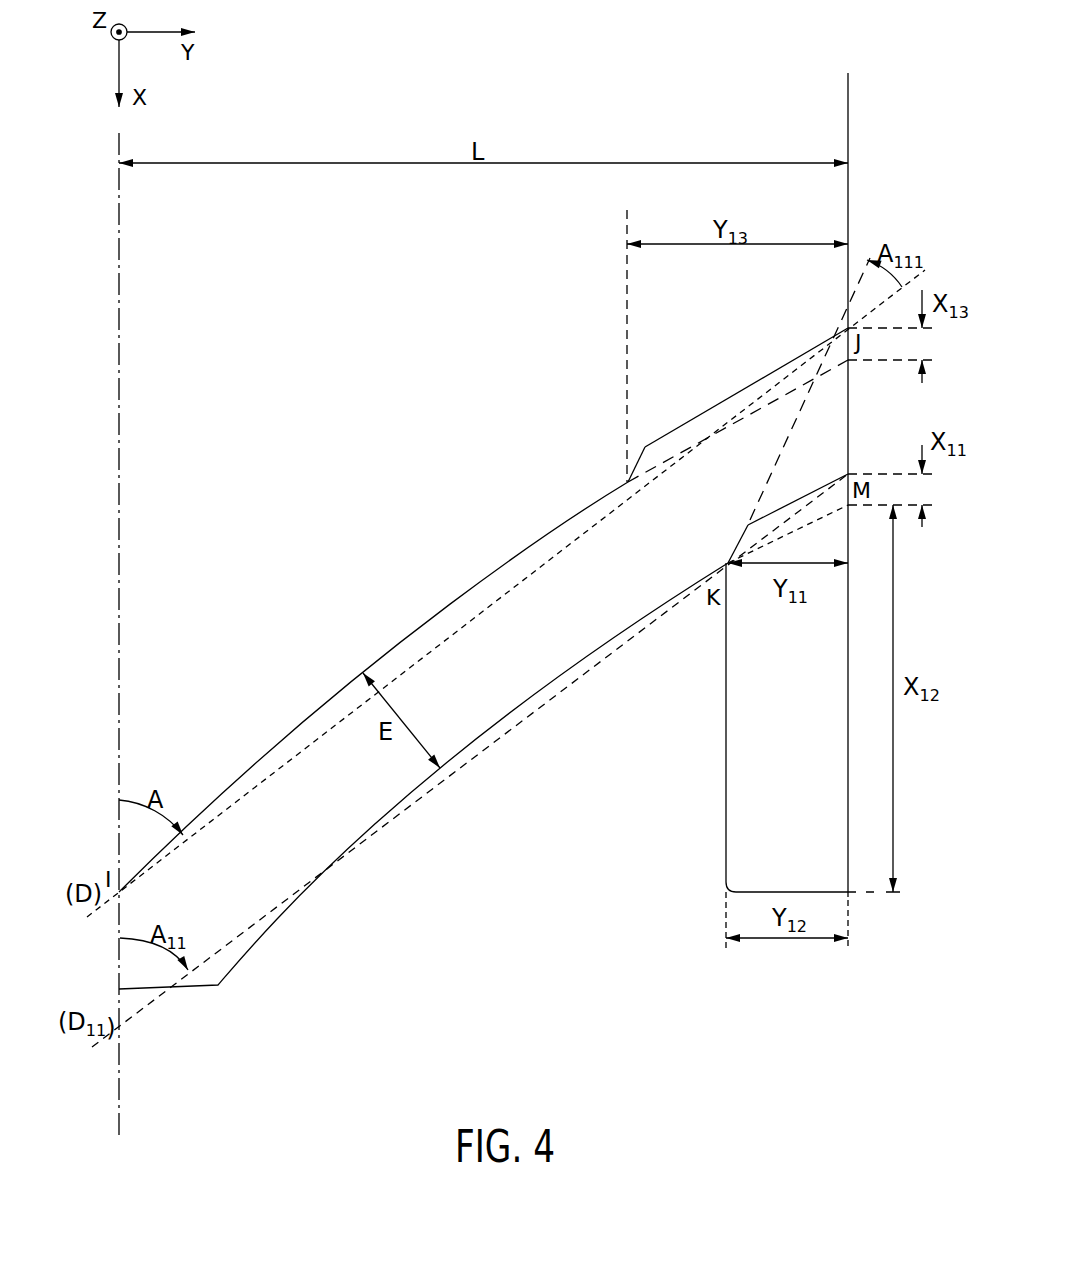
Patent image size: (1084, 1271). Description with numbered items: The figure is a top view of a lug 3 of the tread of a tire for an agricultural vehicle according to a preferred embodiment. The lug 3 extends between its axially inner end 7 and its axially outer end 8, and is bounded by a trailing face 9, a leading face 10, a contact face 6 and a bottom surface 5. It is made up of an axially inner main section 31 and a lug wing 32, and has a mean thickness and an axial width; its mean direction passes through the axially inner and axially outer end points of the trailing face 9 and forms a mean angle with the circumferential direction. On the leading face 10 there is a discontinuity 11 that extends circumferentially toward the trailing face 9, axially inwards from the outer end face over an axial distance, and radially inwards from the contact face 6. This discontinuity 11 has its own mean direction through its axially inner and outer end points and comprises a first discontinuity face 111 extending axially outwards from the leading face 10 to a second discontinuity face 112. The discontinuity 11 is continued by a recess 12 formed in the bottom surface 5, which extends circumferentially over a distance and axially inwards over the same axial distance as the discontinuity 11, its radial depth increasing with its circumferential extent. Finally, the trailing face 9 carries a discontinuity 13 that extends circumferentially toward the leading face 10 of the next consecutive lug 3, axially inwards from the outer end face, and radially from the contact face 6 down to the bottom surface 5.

The lug 3 is at (477, 684).
The bottom surface 5 is at (423, 831).
The contact face 6 is at (248, 817).
The axially inner end 7 is at (118, 989).
The axially outer end 8 is at (852, 410).
The trailing face 9 is at (373, 677).
The leading face 10 is at (429, 781).
The discontinuity on the leading face 11 is at (728, 506).
The recess 12 is at (755, 717).
The discontinuity on the trailing face 13 is at (738, 386).
The axially inner main section 31 is at (506, 562).
The lug wing 32 is at (690, 420).
The first discontinuity face 111 is at (724, 557).
The second discontinuity face 112 is at (787, 503).